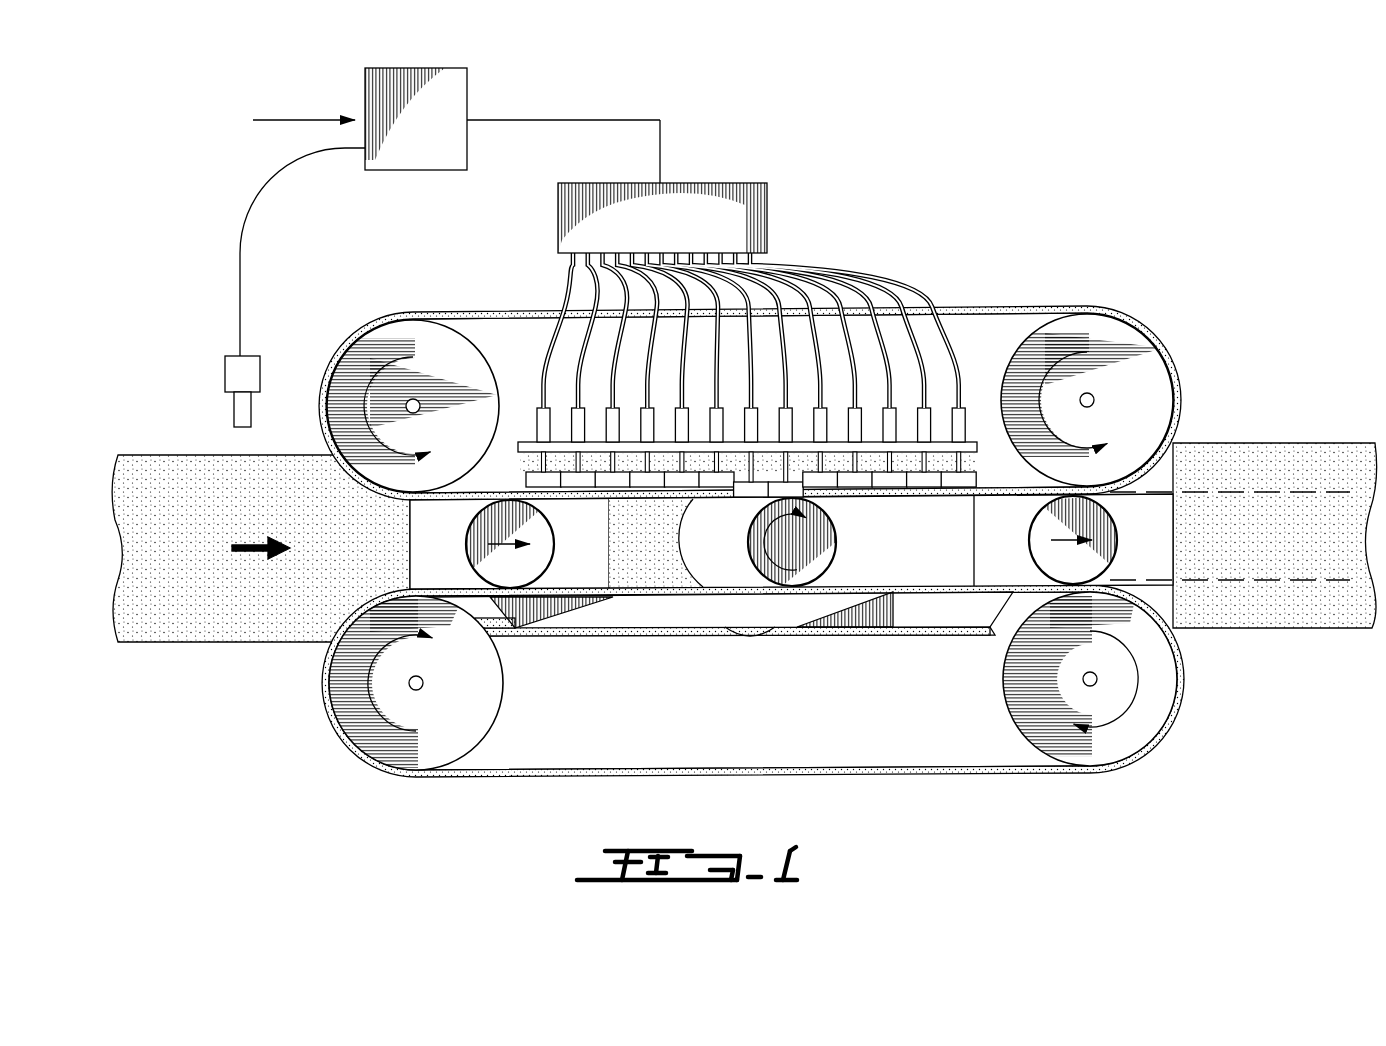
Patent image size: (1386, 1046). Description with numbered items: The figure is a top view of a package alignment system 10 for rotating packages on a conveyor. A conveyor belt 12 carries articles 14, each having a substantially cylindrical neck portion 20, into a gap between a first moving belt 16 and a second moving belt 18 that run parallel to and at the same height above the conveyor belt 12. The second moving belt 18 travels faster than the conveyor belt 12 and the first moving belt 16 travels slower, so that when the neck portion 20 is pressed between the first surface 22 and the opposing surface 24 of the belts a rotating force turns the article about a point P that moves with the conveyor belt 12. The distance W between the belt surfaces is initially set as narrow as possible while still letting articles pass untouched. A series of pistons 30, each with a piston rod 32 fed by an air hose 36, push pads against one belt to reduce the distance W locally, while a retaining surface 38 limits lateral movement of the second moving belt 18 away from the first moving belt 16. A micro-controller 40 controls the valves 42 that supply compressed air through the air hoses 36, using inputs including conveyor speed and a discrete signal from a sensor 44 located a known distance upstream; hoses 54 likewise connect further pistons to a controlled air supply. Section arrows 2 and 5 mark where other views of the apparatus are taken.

The package alignment system 10 is at (1192, 250).
The conveyor belt 12 is at (137, 622).
The articles 14 is at (714, 705).
The first moving belt 16 is at (907, 778).
The second moving belt 18 is at (939, 307).
The neck portion 20 is at (1120, 530).
The first surface 22 is at (633, 575).
The surface of the second moving belt 24 is at (605, 514).
The pistons 30 is at (977, 475).
The piston rod 32 is at (960, 415).
The air hose 36 is at (849, 268).
The retaining surface 38 is at (923, 607).
The micro-controller 40 is at (418, 68).
The valves 42 is at (714, 183).
The sensor 44 is at (225, 372).
The hoses 54 is at (878, 582).
The section line 2- 2 is at (330, 544).
The section line 5- 5 is at (321, 795).
The point P is at (794, 540).
The distance W is at (1338, 494).